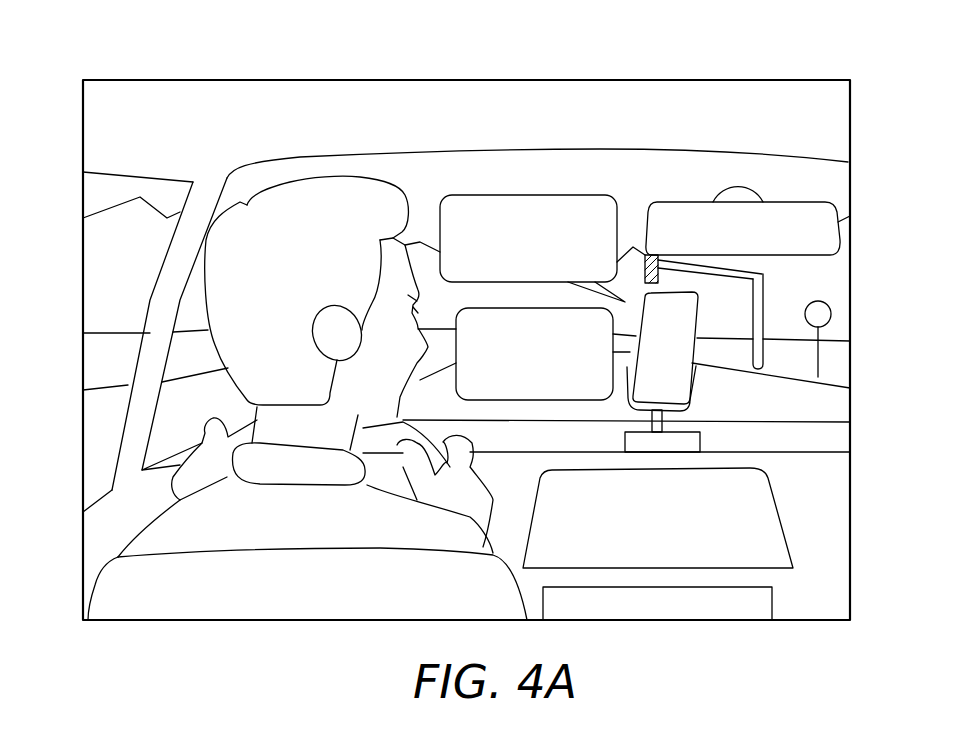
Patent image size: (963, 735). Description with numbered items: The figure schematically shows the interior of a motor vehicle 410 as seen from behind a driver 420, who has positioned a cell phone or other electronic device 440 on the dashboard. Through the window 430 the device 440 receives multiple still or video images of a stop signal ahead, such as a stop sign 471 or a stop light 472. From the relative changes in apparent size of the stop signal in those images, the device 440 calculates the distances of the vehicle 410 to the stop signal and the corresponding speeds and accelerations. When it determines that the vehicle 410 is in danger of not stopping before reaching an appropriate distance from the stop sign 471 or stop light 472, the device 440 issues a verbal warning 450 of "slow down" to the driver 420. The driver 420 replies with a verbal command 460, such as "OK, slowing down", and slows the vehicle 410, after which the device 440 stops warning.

The motor vehicle 410 is at (160, 255).
The driver 420 is at (333, 178).
The window 430 is at (825, 182).
The electronic device 440 is at (686, 352).
The verbal warning 450 is at (543, 195).
The verbal command 460 is at (542, 400).
The stop sign 471 is at (833, 315).
The stop light 472 is at (763, 288).